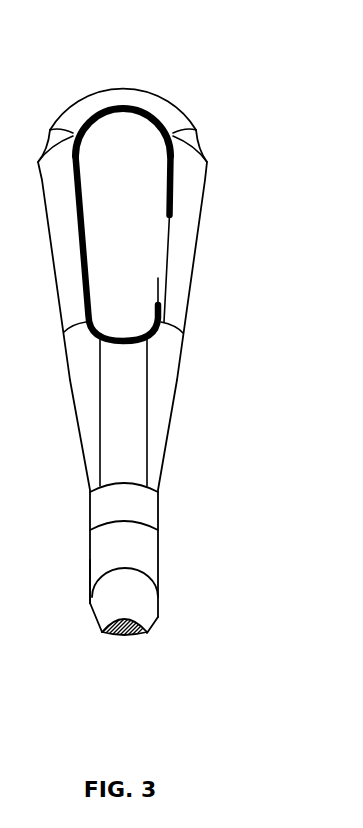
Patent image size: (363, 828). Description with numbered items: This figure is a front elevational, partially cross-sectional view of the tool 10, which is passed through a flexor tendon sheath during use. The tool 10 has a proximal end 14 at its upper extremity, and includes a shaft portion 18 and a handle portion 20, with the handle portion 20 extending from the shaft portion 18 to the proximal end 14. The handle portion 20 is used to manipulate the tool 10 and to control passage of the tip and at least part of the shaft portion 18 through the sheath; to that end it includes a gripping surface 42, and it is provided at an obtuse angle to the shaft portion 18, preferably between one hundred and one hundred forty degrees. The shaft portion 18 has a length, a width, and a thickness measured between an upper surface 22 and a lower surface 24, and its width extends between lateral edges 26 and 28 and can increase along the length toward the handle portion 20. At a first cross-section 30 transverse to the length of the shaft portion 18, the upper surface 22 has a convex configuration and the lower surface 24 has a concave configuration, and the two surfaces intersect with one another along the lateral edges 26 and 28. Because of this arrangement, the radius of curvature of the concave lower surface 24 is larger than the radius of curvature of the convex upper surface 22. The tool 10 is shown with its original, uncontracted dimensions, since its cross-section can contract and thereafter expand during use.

The tool 10 is at (263, 328).
The proximal end 14 is at (120, 88).
The shaft portion 18 is at (125, 612).
The handle portion 20 is at (178, 221).
The upper surface 22 is at (133, 597).
The lower surface 24 is at (110, 633).
The lateral edge 26 is at (90, 603).
The lateral edge 28 is at (153, 622).
The first cross-section 30 is at (127, 633).
The gripping surface 42 is at (135, 170).